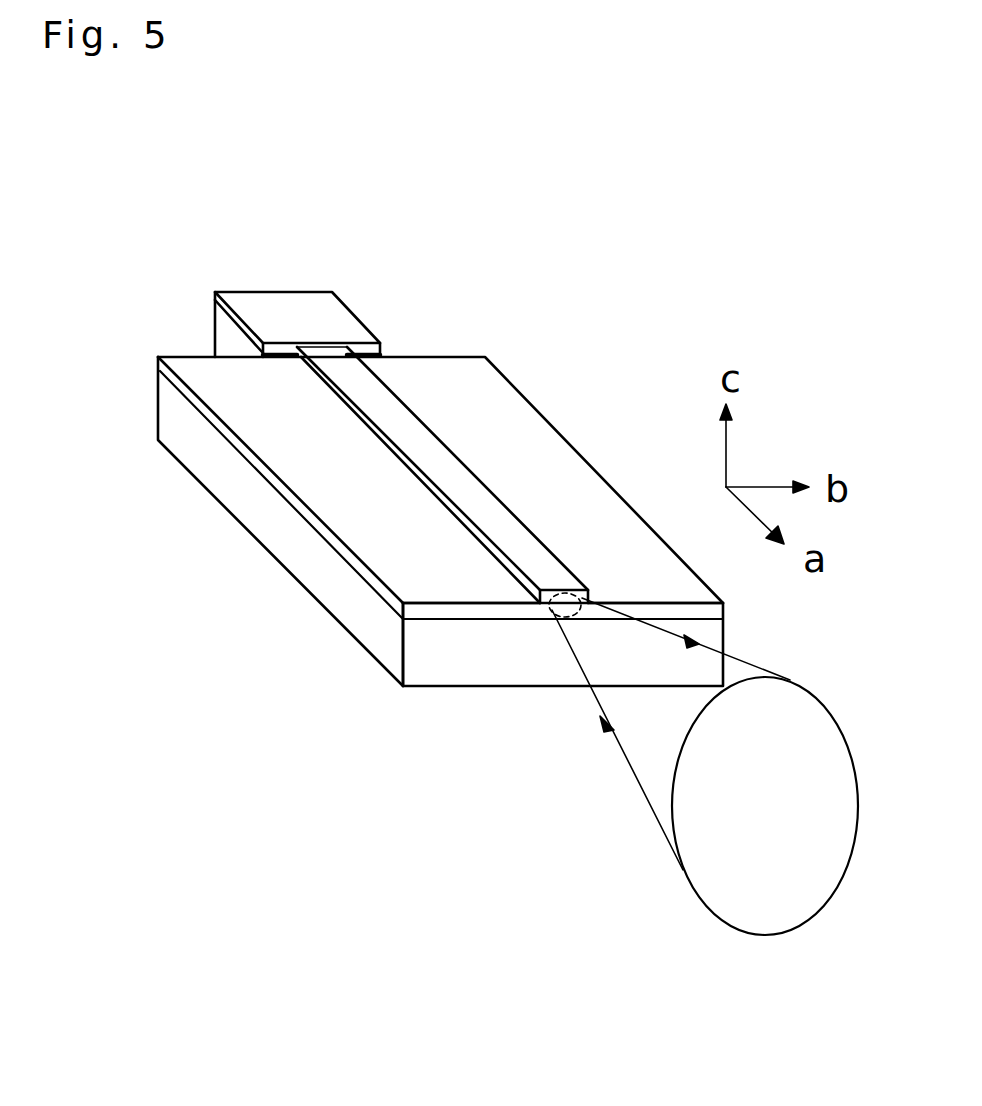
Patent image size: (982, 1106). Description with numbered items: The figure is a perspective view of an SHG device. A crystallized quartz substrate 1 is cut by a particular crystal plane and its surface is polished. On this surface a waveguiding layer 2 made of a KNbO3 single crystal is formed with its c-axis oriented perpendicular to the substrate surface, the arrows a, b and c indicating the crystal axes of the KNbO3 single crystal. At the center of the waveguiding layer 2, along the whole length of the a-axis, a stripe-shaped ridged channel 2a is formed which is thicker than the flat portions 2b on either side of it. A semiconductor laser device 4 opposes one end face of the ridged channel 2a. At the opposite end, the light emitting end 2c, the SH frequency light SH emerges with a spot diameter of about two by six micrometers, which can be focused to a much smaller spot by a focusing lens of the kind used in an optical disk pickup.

The crystallized quartz substrate 1 is at (177, 416).
The waveguiding layer 2 is at (160, 367).
The ridged channel 2a is at (412, 432).
The flat portions 2b is at (525, 452).
The light emitting end 2c is at (432, 612).
The semiconductor laser device 4 is at (288, 307).
The SH frequency SH is at (555, 613).